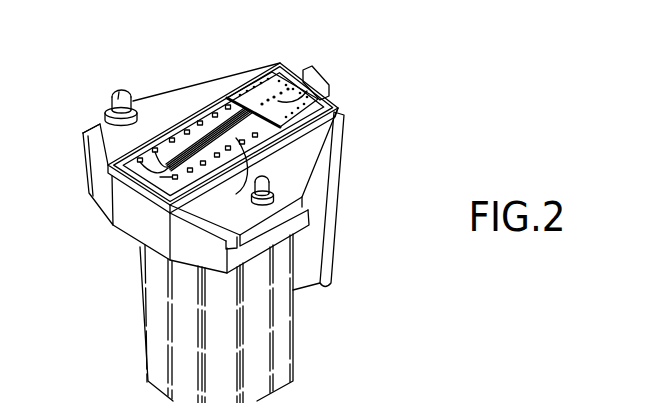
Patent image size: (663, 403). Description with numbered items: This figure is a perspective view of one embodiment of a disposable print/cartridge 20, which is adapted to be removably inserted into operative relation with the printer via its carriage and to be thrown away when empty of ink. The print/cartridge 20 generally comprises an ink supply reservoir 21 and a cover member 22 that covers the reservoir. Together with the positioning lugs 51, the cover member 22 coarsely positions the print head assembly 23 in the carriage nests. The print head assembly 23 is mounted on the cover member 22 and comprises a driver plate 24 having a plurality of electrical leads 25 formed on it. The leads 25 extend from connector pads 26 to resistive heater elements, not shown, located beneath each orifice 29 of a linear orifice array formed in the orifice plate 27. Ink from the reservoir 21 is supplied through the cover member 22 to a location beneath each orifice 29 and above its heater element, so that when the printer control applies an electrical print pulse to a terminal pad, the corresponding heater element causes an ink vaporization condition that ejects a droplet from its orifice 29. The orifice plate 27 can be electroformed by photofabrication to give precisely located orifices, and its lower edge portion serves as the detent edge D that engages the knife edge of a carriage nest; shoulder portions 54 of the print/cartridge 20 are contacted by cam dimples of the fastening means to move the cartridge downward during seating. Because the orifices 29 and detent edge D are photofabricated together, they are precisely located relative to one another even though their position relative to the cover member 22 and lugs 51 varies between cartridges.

The print/cartridge 20 is at (239, 203).
The ink supply reservoir 21 is at (266, 343).
The cover member 22 is at (142, 208).
The print head assembly 23 is at (280, 147).
The driver plate 24 is at (83, 133).
The electrical leads 25 is at (208, 104).
The connector pads 26 is at (178, 132).
The orifice plate 27 is at (267, 88).
The orifice 29 is at (325, 98).
The positioning lugs 51 is at (119, 93).
The shoulder portions 54 is at (322, 165).